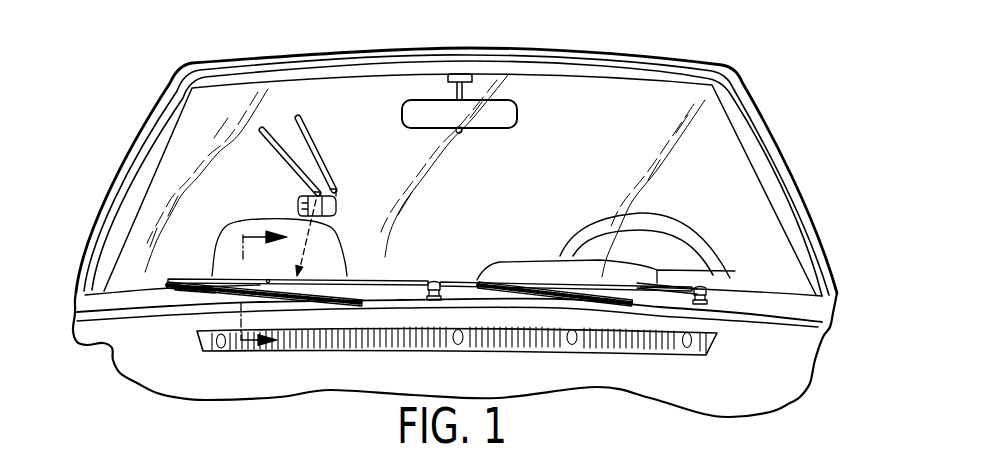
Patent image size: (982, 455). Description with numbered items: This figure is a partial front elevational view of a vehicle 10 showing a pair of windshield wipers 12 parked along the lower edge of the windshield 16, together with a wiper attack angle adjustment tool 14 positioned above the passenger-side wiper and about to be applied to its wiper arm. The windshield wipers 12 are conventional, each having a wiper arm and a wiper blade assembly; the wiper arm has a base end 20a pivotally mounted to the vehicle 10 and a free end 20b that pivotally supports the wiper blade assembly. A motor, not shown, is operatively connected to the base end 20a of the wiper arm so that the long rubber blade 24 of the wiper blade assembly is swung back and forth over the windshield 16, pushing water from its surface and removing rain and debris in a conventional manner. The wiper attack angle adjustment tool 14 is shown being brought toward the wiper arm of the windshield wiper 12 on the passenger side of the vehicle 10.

The vehicle 10 is at (718, 50).
The windshield wiper 12 is at (437, 283).
The wiper attack angle adjustment tool 14 is at (333, 154).
The windshield 16 is at (715, 160).
The base end 20a is at (418, 282).
The free end 20b is at (313, 277).
The long rubber blade 24 is at (205, 284).